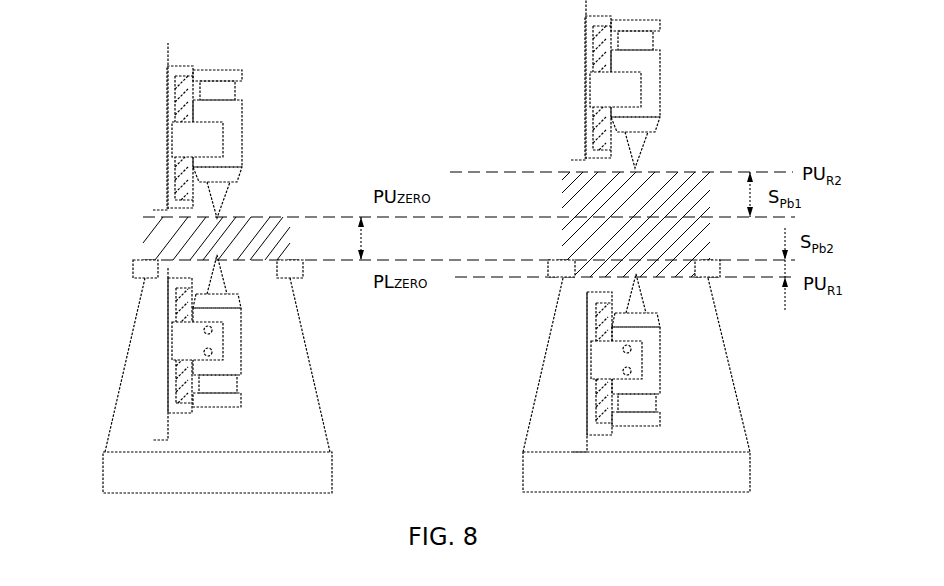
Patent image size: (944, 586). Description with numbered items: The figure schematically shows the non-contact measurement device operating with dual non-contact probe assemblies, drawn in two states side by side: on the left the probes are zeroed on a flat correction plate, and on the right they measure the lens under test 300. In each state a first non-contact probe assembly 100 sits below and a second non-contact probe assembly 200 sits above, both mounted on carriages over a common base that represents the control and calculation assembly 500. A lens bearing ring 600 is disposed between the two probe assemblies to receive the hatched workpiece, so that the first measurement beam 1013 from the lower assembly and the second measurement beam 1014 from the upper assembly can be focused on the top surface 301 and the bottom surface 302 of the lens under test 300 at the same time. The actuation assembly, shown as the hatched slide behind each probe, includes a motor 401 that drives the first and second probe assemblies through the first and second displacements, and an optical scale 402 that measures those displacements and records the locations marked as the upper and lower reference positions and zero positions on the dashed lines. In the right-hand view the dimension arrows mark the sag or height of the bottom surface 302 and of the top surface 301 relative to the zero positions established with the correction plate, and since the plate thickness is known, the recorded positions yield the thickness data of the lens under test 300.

The first non-contact probe assembly 100 is at (230, 386).
The second non-contact probe assembly 200 is at (230, 95).
The lens under test 300 is at (652, 197).
The top surface 301 is at (590, 258).
The bottom surface 302 is at (699, 174).
The motor 401 is at (337, 350).
The optical scale 402 is at (200, 334).
The control and calculation assembly 500 is at (308, 487).
The lens bearing ring 600 is at (152, 272).
The first measurement beam 1013 is at (220, 290).
The second measurement beam 1014 is at (220, 193).